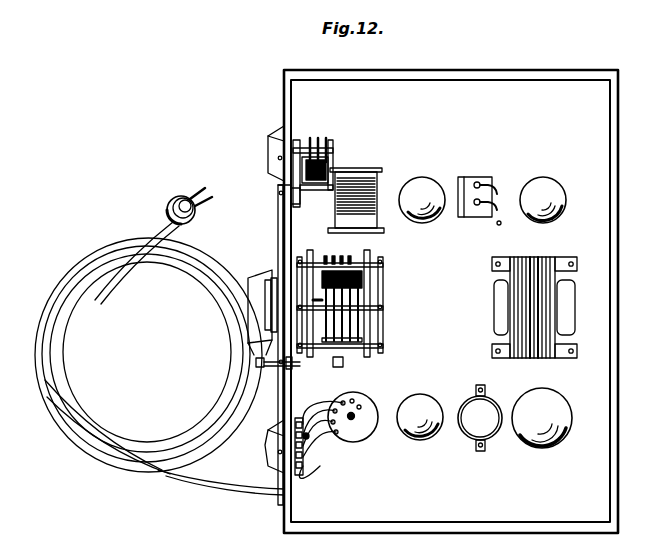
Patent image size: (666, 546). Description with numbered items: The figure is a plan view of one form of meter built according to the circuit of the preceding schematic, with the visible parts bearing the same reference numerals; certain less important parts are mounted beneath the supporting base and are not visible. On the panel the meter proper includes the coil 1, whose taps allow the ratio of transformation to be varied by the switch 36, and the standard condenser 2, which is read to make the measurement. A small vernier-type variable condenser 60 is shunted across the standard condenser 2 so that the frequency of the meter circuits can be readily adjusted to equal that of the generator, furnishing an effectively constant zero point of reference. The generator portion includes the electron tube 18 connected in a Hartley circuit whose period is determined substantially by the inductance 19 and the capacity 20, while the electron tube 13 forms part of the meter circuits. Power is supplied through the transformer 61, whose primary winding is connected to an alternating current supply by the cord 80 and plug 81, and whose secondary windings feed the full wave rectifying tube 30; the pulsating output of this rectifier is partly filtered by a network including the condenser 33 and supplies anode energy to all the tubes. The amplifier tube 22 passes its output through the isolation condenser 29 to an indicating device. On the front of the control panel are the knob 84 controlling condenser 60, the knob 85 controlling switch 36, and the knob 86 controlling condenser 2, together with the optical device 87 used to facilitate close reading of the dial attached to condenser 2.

The coil 1 is at (348, 437).
The standard condenser 2 is at (352, 297).
The electron tube 13 is at (413, 442).
The electron tube 18 is at (423, 194).
The inductance 19 is at (368, 187).
The capacity 20 is at (297, 197).
The electron tube 22 is at (547, 188).
The isolation condenser 29 is at (485, 183).
The full wave rectifying tube 30 is at (541, 442).
The condenser 33 is at (490, 430).
The switch 36 is at (301, 440).
The variable condenser 60 is at (327, 143).
The transformer 61 is at (537, 305).
The cord 80 is at (52, 308).
The plug 81 is at (177, 200).
The knob 84 is at (268, 150).
The knob 85 is at (272, 450).
The knob 86 is at (262, 276).
The optical device 87 is at (268, 302).